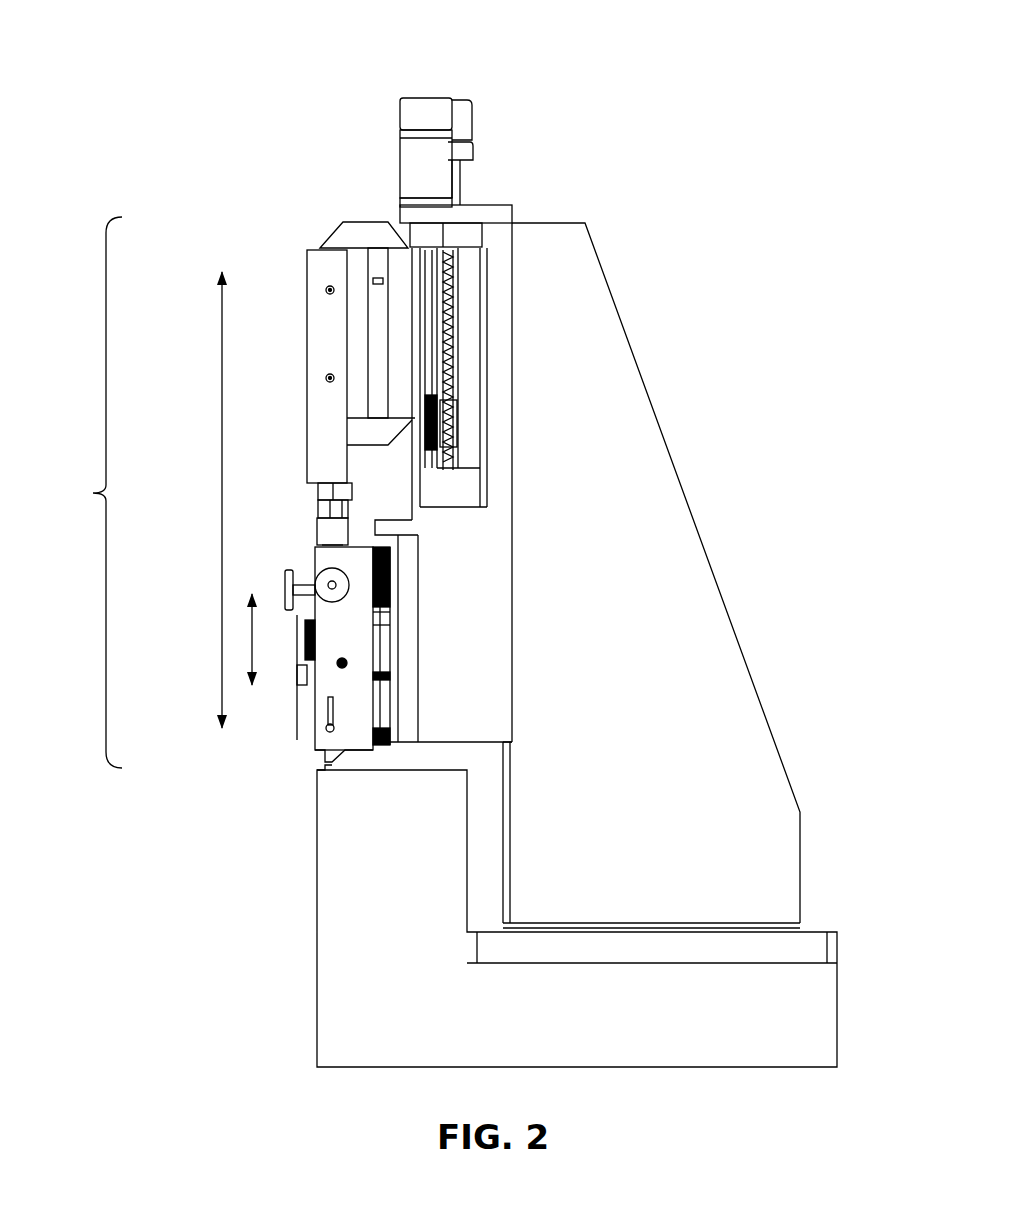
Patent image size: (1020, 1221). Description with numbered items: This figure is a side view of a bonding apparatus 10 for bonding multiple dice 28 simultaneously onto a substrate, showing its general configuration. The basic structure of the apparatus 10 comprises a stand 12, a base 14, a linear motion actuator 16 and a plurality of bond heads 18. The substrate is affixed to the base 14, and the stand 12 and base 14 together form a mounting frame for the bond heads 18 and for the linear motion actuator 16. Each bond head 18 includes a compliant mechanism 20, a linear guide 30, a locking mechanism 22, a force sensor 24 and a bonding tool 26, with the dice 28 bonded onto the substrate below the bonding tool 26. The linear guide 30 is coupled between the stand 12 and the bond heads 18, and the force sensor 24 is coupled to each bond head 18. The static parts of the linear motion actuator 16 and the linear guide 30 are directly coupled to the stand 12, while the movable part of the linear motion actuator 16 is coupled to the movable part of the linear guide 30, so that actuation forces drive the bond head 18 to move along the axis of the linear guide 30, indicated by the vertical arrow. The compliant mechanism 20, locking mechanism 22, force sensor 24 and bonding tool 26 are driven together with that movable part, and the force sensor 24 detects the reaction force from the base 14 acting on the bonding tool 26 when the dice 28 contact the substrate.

The bonding apparatus 10 is at (160, 161).
The stand 12 is at (597, 530).
The base 14 is at (680, 996).
The linear motion actuator 16 is at (435, 159).
The bond heads 18 is at (388, 505).
The compliant mechanism 20 is at (378, 259).
The locking mechanism 22 is at (463, 425).
The force sensor 24 is at (310, 496).
The bonding tool 26 is at (335, 639).
The dice 28 is at (310, 776).
The linear guide 30 is at (466, 321).